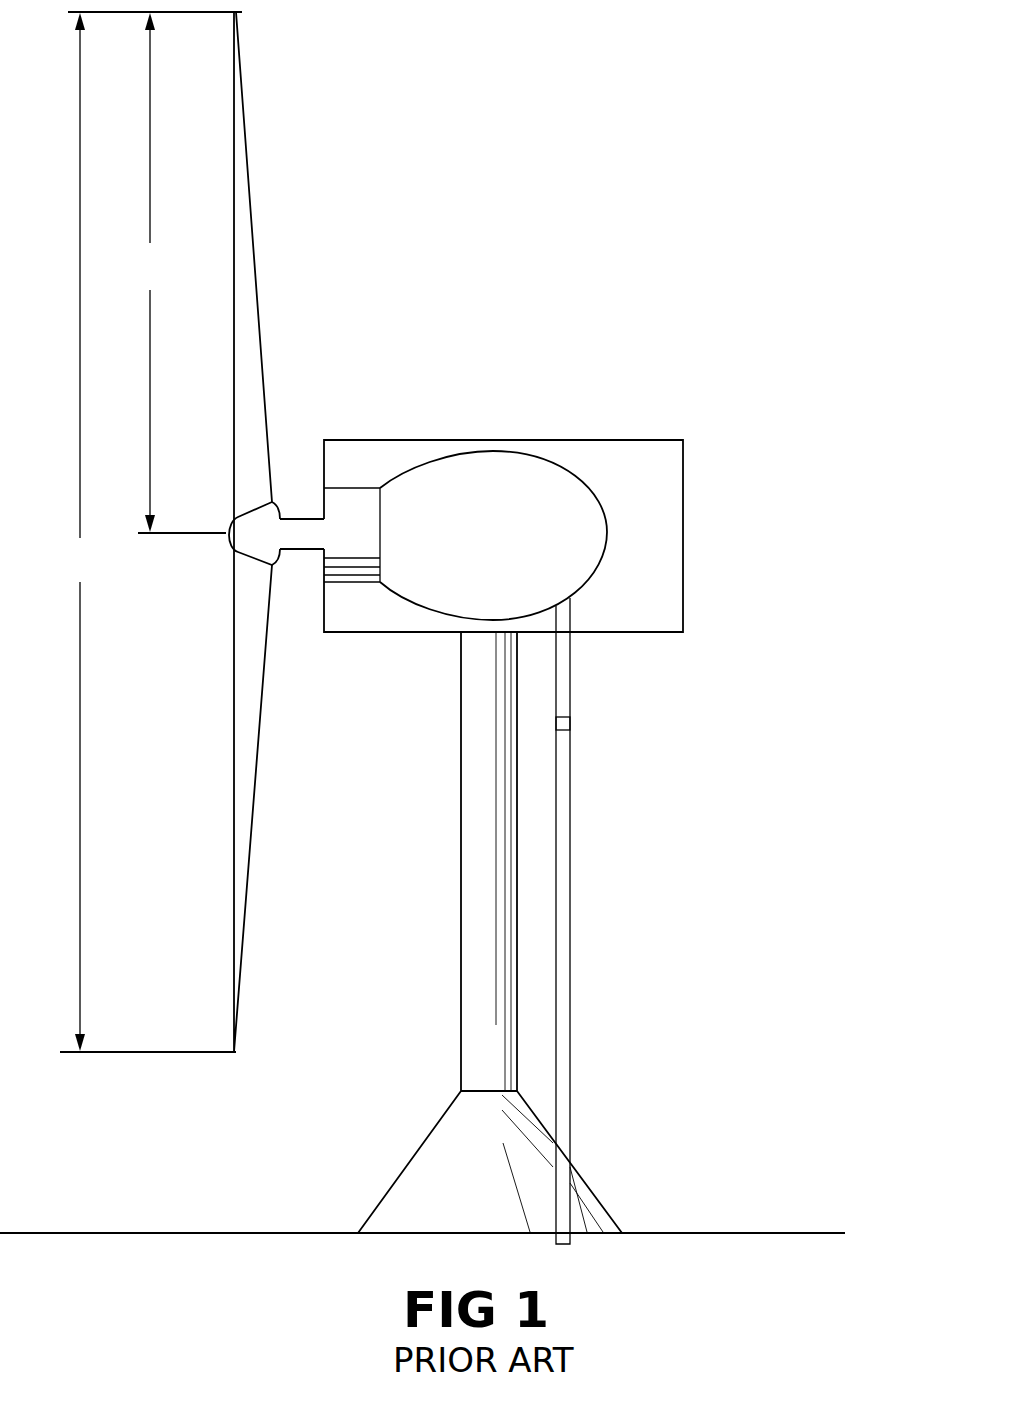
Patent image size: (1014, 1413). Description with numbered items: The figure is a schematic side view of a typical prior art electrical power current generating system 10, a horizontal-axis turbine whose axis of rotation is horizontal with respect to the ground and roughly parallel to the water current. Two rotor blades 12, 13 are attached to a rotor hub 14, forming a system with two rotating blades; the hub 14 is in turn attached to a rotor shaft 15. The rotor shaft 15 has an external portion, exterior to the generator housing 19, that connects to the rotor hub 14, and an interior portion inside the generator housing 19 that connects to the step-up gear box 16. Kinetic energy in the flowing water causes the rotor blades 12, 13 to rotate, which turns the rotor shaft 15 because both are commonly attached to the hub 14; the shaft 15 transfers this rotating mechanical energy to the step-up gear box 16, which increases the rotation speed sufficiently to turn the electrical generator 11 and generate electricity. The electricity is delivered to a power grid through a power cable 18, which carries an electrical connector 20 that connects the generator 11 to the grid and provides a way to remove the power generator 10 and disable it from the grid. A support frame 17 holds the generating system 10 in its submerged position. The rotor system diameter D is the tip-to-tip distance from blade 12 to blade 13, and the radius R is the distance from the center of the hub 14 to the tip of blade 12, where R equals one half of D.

The electrical power current generating system 10 is at (540, 186).
The electrical generator 11 is at (542, 538).
The rotor blade 12 is at (248, 175).
The rotor blade 13 is at (246, 902).
The rotor hub 14 is at (227, 540).
The rotor shaft 15 is at (298, 536).
The step-up gear box 16 is at (343, 535).
The support frame 17 is at (477, 955).
The power cable 18 is at (572, 905).
The generator housing 19 is at (686, 518).
The electrical connector 20 is at (571, 726).